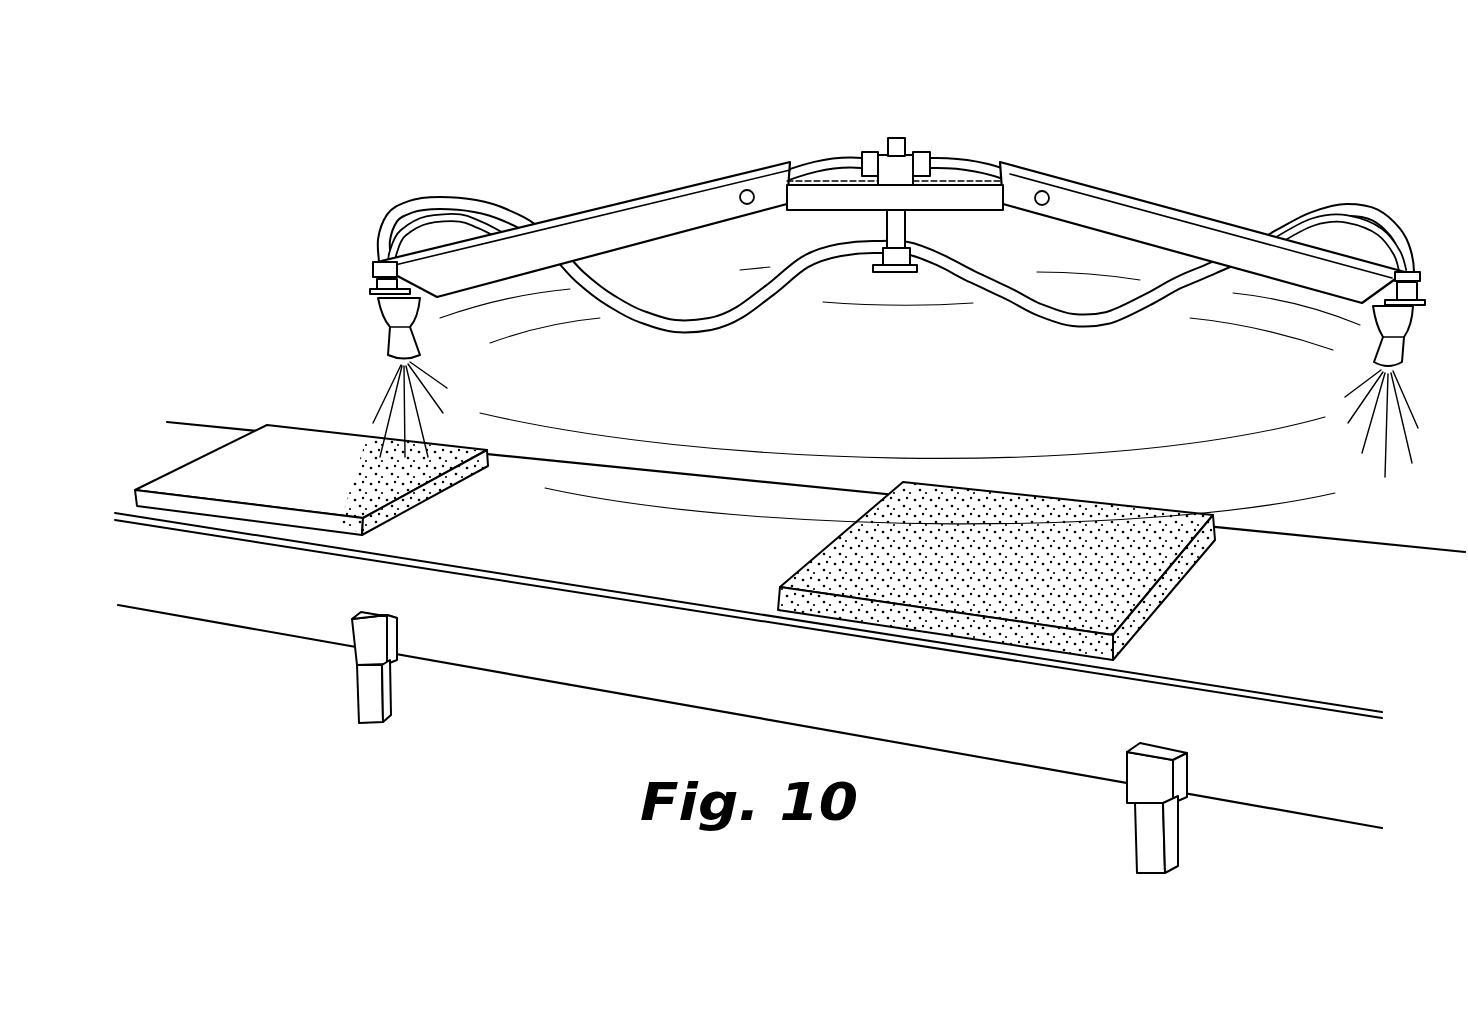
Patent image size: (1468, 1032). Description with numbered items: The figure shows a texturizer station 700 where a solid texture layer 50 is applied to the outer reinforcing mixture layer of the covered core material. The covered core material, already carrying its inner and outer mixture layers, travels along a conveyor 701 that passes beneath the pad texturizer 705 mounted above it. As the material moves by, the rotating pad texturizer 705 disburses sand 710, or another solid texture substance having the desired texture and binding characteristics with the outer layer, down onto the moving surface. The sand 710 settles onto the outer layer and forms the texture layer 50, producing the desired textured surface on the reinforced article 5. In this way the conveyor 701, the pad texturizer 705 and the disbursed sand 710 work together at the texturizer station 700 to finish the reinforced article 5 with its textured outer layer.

The reinforced article 5 is at (996, 525).
The texture layer 50 is at (943, 507).
The texturizer station 700 is at (897, 253).
The conveyor 701 is at (585, 556).
The pad texturizer 705 is at (1263, 257).
The sand 710 is at (435, 400).